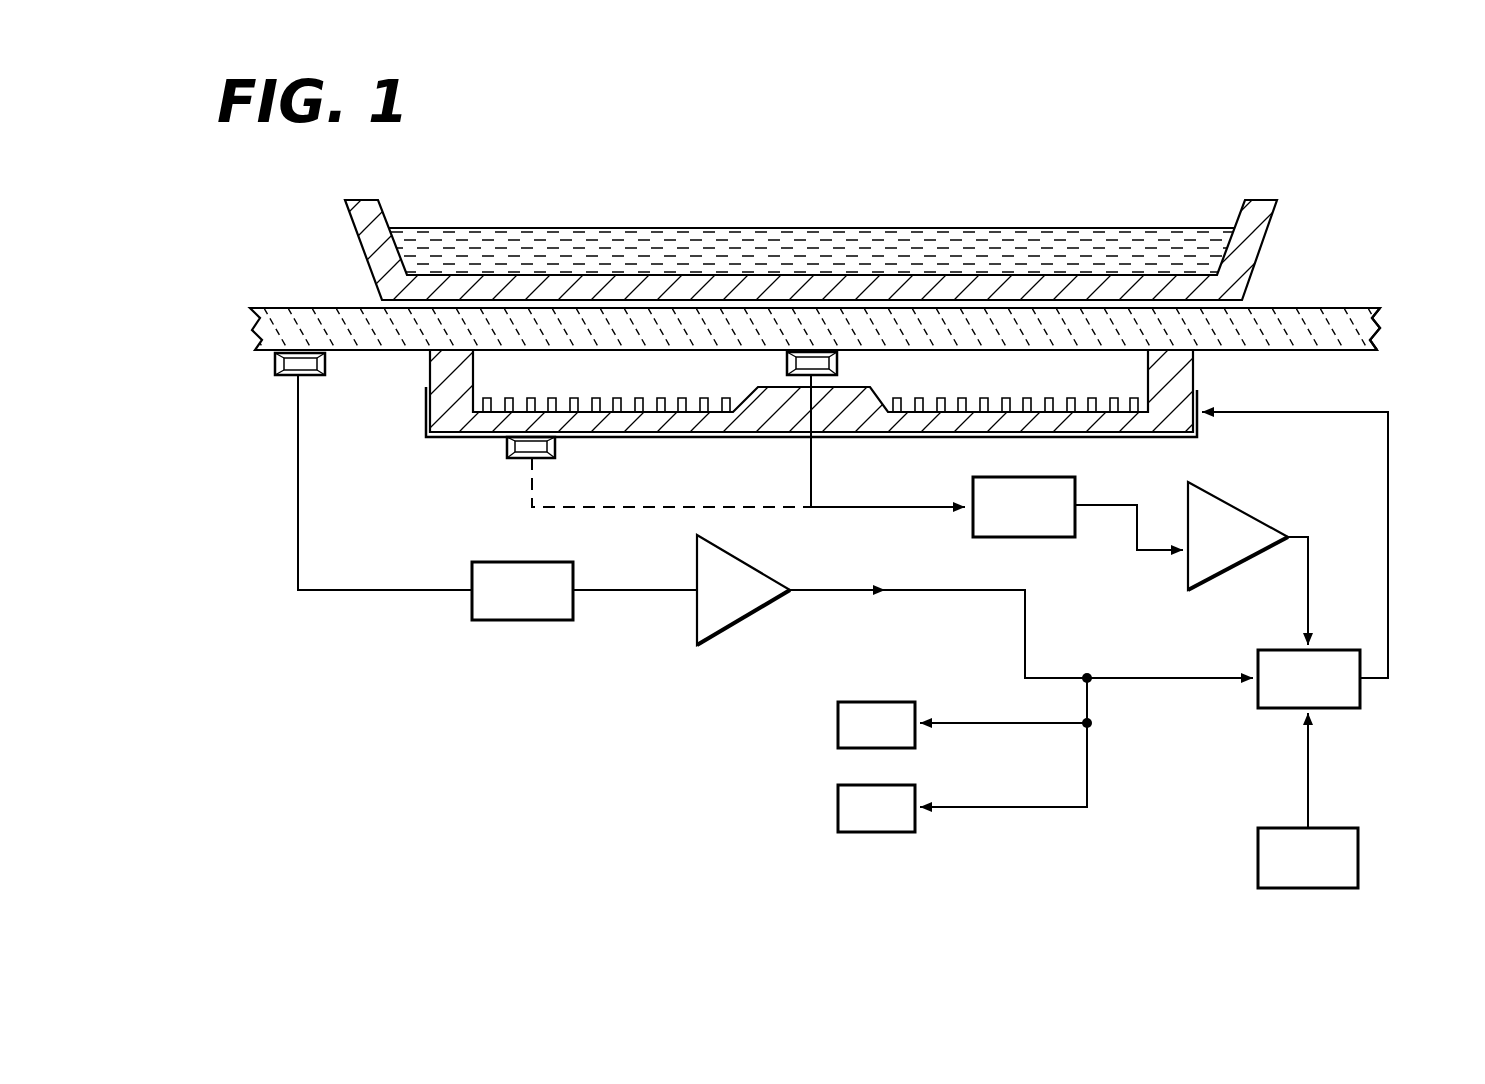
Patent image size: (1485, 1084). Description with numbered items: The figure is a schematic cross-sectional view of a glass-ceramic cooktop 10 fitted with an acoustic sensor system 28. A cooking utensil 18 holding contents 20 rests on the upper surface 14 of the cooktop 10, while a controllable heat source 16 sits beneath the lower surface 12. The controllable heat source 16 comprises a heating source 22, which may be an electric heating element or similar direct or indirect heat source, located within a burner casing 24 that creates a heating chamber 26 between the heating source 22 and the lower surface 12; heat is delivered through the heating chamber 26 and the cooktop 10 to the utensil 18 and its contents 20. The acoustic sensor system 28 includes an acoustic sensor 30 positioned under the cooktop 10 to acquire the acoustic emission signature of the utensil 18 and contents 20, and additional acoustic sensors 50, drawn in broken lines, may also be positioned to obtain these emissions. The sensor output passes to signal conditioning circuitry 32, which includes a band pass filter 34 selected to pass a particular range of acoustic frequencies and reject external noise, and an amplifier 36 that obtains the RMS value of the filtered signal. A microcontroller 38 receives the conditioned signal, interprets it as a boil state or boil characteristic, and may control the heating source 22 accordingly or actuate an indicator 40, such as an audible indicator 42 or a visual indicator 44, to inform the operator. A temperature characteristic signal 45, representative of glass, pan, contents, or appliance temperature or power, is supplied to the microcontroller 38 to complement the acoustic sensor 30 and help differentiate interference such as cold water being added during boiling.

The glass-ceramic cooktop 10 is at (1380, 335).
The lower surface 12 is at (1335, 350).
The upper surface 14 is at (1290, 308).
The controllable heat source 16 is at (1150, 440).
The cooking utensil 18 is at (1262, 200).
The contents 20 is at (778, 245).
The heating source 22 is at (1023, 410).
The burner casing 24 is at (1200, 393).
The heating chamber 26 is at (577, 389).
The acoustic sensor system 28 is at (285, 525).
The acoustic sensor 30 is at (282, 380).
The signal conditioning circuitry 32 is at (640, 643).
The band pass filter 34 is at (503, 606).
The amplifier 36 is at (708, 605).
The microcontroller 38 is at (1290, 694).
The indicator 40 is at (800, 760).
The audible indicator 42 is at (857, 740).
The visual indicator 44 is at (857, 823).
The temperature characteristic signal 45 is at (1289, 873).
The additional acoustic sensors 50 is at (840, 366).